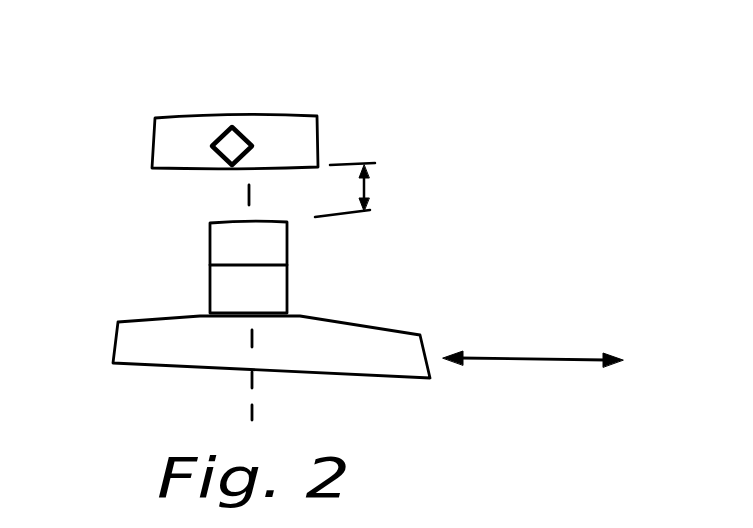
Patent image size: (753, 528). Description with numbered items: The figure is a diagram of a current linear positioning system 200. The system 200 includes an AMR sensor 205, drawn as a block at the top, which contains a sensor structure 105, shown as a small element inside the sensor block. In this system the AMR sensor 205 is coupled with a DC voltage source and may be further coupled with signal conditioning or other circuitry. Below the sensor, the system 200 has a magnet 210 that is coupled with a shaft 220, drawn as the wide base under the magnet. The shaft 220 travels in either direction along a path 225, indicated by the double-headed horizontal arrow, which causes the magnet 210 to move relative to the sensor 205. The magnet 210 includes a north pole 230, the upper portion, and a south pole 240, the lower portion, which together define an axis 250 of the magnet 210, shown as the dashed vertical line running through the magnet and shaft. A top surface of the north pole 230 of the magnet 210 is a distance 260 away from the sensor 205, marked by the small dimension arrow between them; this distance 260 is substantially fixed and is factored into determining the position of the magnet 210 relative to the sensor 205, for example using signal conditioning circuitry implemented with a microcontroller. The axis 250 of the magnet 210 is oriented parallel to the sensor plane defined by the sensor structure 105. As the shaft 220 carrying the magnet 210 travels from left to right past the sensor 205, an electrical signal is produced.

The linear positioning system 200 is at (503, 164).
The sensor structure 105 is at (258, 133).
The AMR sensor 205 is at (177, 117).
The magnet 210 is at (236, 267).
The north pole 230 is at (210, 242).
The south pole 240 is at (208, 291).
The shaft 220 is at (148, 372).
The path 225 is at (552, 347).
The axis 250 is at (263, 407).
The distance 260 is at (378, 188).